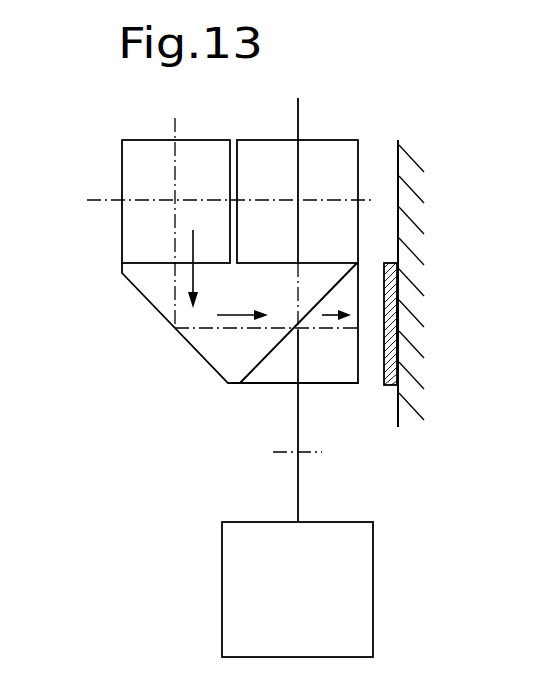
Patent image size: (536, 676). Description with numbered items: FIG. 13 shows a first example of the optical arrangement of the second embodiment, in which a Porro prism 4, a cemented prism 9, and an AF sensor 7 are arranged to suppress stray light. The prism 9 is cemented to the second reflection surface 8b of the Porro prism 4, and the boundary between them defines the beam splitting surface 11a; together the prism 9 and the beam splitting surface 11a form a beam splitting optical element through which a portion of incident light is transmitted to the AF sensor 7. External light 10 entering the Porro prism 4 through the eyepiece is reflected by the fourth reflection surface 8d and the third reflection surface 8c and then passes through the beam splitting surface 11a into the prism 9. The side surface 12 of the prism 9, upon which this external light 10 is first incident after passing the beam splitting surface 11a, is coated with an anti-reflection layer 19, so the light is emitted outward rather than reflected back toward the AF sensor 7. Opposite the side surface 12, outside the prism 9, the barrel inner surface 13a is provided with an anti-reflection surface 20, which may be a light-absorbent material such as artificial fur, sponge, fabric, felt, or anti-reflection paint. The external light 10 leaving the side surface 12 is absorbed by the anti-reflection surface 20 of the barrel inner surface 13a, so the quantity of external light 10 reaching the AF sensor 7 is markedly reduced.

The Porro prism 4 is at (302, 132).
The AF sensor 7 is at (342, 567).
The second reflection surface 8b is at (263, 383).
The third reflection surface 8c is at (128, 283).
The fourth reflection surface 8d is at (148, 173).
The prism 9 is at (317, 366).
The external light 10 is at (323, 320).
The beam splitting surface 11a is at (254, 383).
The side surface 12 is at (365, 283).
The barrel inner surface 13a is at (398, 170).
The anti-reflection layer 19 is at (362, 372).
The anti-reflection surface 20 is at (398, 341).